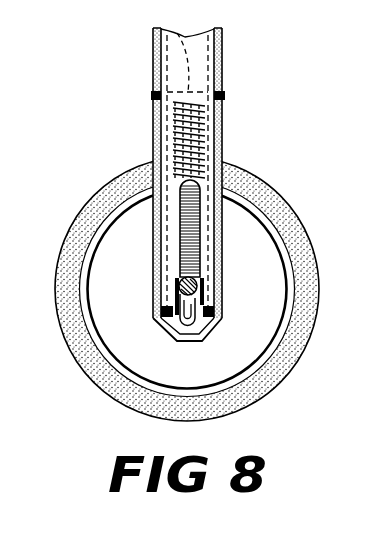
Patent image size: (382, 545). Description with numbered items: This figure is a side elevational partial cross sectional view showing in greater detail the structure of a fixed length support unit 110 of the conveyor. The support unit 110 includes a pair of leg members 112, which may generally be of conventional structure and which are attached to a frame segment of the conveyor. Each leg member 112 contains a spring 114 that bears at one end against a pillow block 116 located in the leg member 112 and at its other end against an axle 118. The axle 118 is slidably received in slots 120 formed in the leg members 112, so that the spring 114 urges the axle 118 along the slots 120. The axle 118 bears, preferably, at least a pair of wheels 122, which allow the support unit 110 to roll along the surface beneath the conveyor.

The fixed length support unit 110 is at (173, 208).
The leg member 112 is at (210, 78).
The spring 114 is at (180, 184).
The pillow block 116 is at (185, 35).
The axle 118 is at (192, 290).
The slot 120 is at (186, 308).
The wheel 122 is at (262, 188).